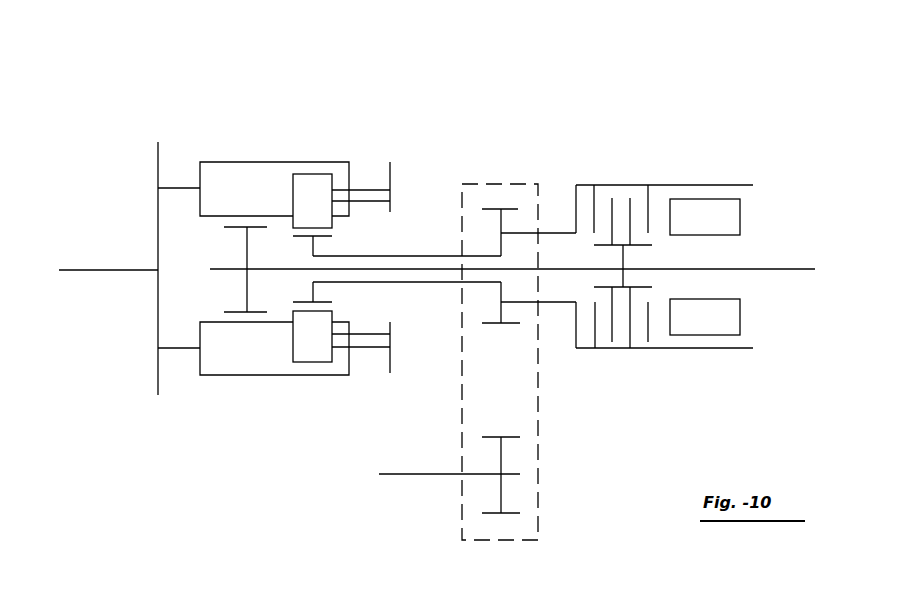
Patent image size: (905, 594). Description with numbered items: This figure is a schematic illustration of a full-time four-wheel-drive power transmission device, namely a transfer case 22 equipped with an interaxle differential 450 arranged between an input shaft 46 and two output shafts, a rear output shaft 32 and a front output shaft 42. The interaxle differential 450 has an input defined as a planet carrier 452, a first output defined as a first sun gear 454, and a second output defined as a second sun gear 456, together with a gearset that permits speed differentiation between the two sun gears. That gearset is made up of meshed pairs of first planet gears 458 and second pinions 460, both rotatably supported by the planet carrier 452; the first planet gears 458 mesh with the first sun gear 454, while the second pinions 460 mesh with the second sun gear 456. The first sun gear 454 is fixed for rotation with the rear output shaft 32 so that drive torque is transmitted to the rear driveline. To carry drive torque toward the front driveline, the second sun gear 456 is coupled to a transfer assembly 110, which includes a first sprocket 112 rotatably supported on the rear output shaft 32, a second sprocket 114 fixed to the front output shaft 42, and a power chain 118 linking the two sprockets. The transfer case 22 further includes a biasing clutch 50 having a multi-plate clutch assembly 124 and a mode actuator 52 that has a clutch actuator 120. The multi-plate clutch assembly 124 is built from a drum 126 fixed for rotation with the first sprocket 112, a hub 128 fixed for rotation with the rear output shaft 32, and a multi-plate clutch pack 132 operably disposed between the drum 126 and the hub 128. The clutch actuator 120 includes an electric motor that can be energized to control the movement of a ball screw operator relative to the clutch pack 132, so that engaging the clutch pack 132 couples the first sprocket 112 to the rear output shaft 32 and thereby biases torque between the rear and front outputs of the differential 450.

The transfer case 22 is at (672, 223).
The rear output shaft 32 is at (770, 268).
The front output shaft 42 is at (413, 473).
The input shaft 46 is at (97, 270).
The biasing clutch 50 is at (666, 180).
The mode actuator 52 is at (750, 200).
The transfer assembly 110 is at (563, 349).
The first sprocket 112 is at (512, 209).
The second sprocket 114 is at (502, 458).
The power chain 118 is at (520, 540).
The clutch actuator 120 is at (723, 315).
The multi-plate clutch assembly 124 is at (607, 358).
The drum 126 is at (723, 348).
The hub 128 is at (623, 253).
The multi-plate clutch pack 132 is at (632, 202).
The interaxle differential 450 is at (302, 251).
The planet carrier 452 is at (157, 167).
The first sun gear 454 is at (247, 252).
The second sun gear 456 is at (315, 246).
The first planet gears 458 is at (237, 185).
The second pinions 460 is at (311, 345).